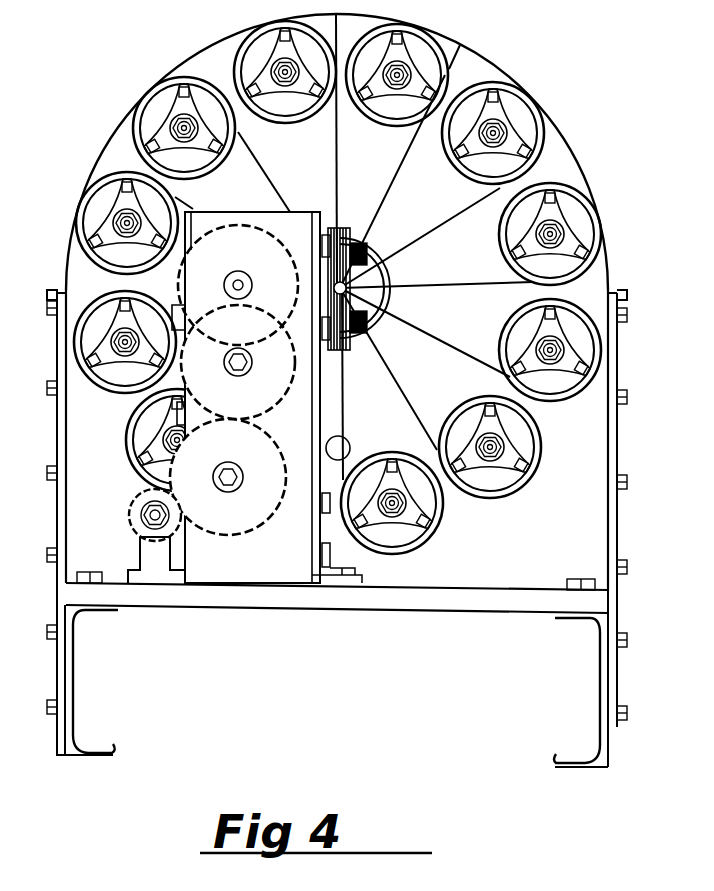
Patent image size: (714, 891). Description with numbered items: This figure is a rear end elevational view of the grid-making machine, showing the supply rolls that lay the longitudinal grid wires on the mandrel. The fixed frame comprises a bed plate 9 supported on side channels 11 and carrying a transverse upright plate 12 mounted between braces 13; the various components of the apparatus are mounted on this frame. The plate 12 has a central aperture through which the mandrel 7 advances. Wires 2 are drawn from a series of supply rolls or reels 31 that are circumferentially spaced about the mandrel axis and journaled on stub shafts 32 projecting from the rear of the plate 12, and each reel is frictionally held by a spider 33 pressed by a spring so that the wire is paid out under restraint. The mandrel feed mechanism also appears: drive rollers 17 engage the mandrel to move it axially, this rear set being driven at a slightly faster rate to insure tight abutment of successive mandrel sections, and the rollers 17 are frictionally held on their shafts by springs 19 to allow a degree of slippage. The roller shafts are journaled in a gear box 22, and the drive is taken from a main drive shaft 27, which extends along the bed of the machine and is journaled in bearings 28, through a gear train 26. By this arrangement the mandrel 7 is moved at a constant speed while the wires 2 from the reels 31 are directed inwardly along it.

The wires 2 is at (458, 216).
The mandrel 7 is at (347, 290).
The bed plate 9 is at (437, 603).
The side channels 11 is at (602, 743).
The transverse upright plate 12 is at (582, 457).
The braces 13 is at (615, 520).
The drive rollers 17 is at (340, 288).
The springs 19 is at (363, 338).
The gear box 22 is at (302, 218).
The gear train 26 is at (248, 433).
The main drive shaft 27 is at (152, 513).
The bearings 28 is at (147, 547).
The supply rolls or reels 31 is at (262, 50).
The stub shafts 32 is at (120, 223).
The spiders 33 is at (167, 128).